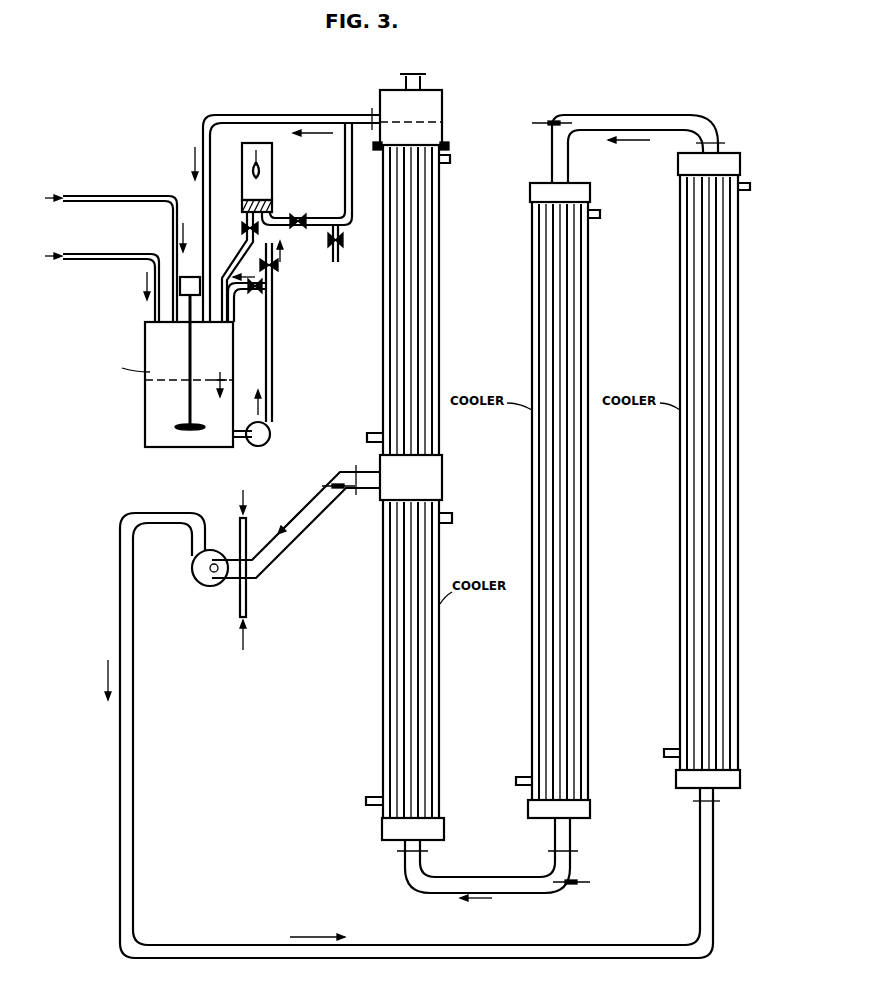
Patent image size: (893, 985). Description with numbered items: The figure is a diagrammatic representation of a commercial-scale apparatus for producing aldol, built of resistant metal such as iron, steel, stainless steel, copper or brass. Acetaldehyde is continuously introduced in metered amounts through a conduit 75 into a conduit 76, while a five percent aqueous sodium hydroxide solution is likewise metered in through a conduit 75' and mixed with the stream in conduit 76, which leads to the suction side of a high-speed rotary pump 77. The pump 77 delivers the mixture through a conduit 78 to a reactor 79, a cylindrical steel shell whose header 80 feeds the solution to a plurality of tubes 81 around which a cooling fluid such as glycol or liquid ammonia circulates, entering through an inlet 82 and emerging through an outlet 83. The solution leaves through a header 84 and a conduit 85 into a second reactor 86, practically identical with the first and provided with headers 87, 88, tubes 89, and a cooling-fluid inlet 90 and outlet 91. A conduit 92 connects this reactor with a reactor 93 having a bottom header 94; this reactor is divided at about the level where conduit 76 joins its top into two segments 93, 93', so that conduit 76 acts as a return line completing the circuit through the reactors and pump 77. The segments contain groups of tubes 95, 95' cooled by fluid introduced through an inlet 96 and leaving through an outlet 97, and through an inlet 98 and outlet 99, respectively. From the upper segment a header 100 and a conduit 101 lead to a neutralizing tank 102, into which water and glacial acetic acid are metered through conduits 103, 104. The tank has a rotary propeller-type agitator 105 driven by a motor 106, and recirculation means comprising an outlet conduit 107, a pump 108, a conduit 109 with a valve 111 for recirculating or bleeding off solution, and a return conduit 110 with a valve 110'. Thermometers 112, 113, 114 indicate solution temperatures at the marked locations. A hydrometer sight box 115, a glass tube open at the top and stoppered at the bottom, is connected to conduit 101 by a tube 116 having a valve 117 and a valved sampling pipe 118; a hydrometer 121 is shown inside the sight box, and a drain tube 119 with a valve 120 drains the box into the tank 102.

The conduit 75 is at (207, 547).
The conduit 75' is at (235, 642).
The conduit 76 is at (275, 560).
The high-speed rotary pump 77 is at (192, 568).
The conduit 78 is at (122, 792).
The reactor 79 is at (740, 690).
The header 80 is at (740, 778).
The tubes 81 is at (730, 608).
The inlet 82 is at (668, 751).
The outlet 83 is at (750, 185).
The header 84 is at (738, 153).
The conduit 85 is at (648, 118).
The second reactor 86 is at (590, 302).
The header 87 is at (590, 190).
The header 88 is at (590, 810).
The tubes 89 is at (570, 520).
The inlet 90 is at (520, 778).
The outlet 91 is at (600, 222).
The conduit 92 is at (408, 878).
The reactor 93 is at (433, 659).
The reactor segment 93' is at (435, 300).
The header 94 is at (382, 828).
The tubes 95 is at (437, 660).
The tubes 95' is at (438, 301).
The inlet 96 is at (372, 798).
The outlet 97 is at (452, 518).
The inlet 98 is at (368, 433).
The outlet 99 is at (450, 160).
The header 100 is at (442, 97).
The conduit 101 is at (293, 115).
The neutralizing tank 102 is at (145, 412).
The conduit 103 is at (78, 196).
The conduit 104 is at (95, 257).
The rotary propeller-type agitator 105 is at (178, 428).
The motor 106 is at (190, 277).
The outlet conduit 107 is at (240, 437).
The pump 108 is at (272, 434).
The conduit 109 is at (273, 302).
The return conduit 110 is at (249, 325).
The valve 110' is at (255, 295).
The valve 111 is at (278, 268).
The thermometer 112 is at (545, 125).
The thermometer 113 is at (583, 884).
The thermometer 114 is at (325, 488).
The hydrometer sight box 115 is at (272, 180).
The tube 116 is at (352, 200).
The valve 117 is at (302, 220).
The valved sampling pipe 118 is at (340, 242).
The drain tube 119 is at (228, 274).
The valve 120 is at (246, 226).
The float 121 is at (262, 157).